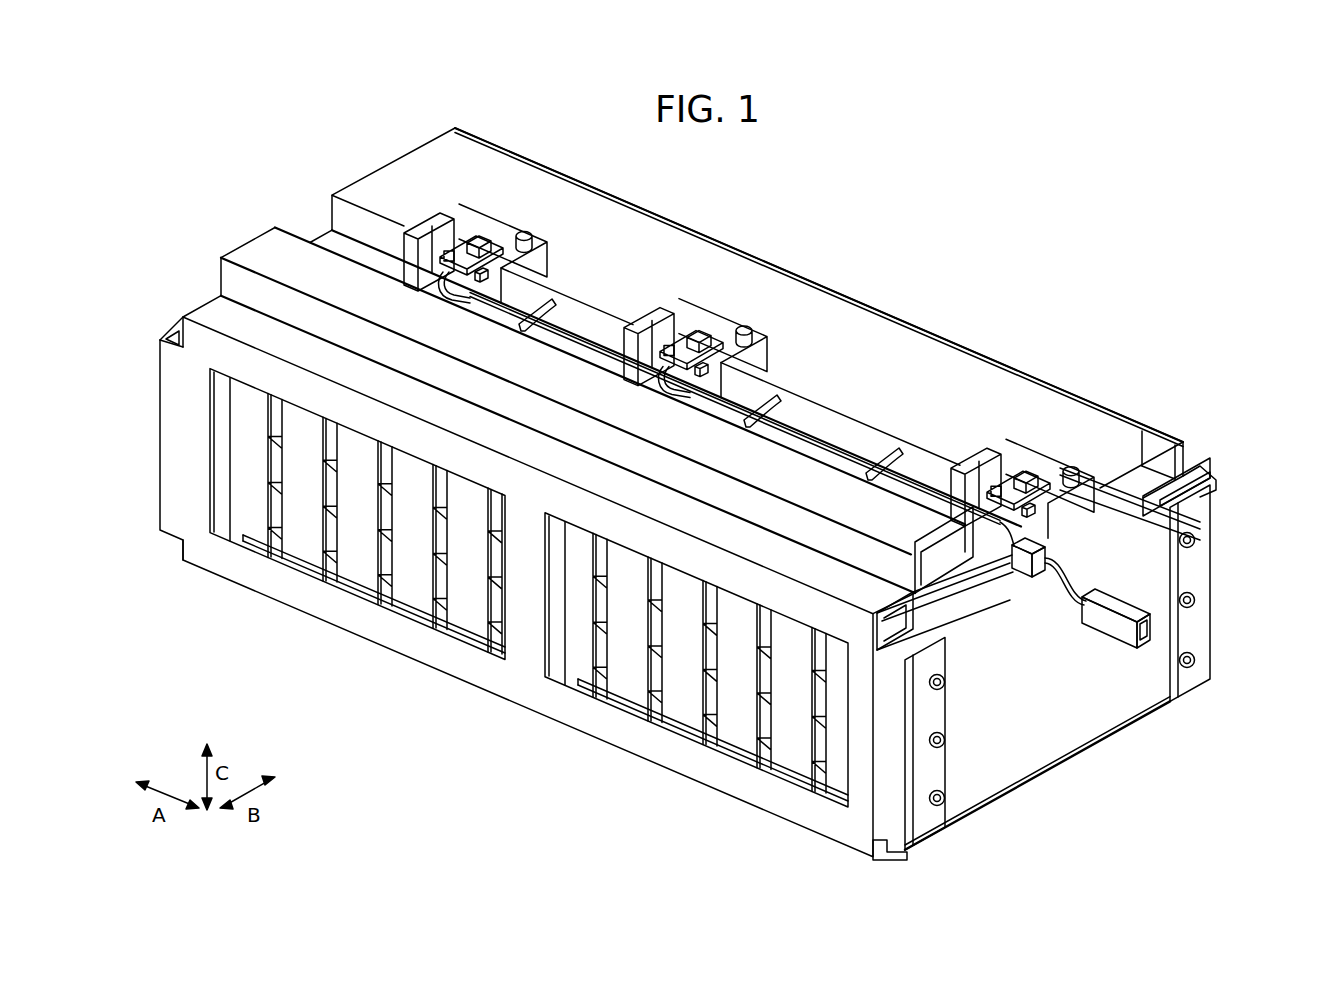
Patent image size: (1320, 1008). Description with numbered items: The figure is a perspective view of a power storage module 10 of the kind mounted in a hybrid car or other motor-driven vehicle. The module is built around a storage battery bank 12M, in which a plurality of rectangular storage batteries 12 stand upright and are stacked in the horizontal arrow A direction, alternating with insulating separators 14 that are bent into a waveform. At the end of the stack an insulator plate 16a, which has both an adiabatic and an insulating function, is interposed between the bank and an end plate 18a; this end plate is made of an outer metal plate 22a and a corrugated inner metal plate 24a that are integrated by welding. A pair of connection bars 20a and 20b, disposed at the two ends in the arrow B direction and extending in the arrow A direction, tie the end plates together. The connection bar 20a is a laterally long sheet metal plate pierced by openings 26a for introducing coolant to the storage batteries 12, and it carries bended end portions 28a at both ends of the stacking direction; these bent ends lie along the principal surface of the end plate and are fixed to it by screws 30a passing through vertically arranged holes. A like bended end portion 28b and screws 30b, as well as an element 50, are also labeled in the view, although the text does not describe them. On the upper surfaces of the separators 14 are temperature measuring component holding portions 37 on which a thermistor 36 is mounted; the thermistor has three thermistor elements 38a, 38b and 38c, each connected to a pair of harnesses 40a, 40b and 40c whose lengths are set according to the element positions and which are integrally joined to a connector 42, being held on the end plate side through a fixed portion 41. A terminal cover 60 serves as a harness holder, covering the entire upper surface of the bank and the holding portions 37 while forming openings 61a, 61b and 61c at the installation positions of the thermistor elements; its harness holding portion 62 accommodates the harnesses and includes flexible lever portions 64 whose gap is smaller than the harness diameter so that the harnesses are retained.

The power storage module 10 is at (1087, 264).
The storage battery 12 is at (682, 705).
The storage battery bank 12M is at (547, 634).
The separator 14 is at (385, 517).
The insulator plate 16a is at (1142, 479).
The end plate 18a is at (1202, 431).
The connection bar 20a is at (470, 688).
The connection bar 20b is at (1215, 490).
The outer metal plate 22a is at (1206, 482).
The inner metal plate 24a is at (1172, 478).
The opening 26a is at (222, 520).
The bended end portion 28a is at (570, 575).
The rear end bracket 28b is at (1225, 611).
The screw 30a is at (945, 800).
The bolts 30b is at (1190, 667).
The thermistor 36 is at (586, 302).
The temperature measuring component holding portion 37 is at (428, 224).
The thermistor element 38a is at (458, 268).
The thermistor element 38b is at (679, 362).
The thermistor element 38c is at (1004, 502).
The harness 40a is at (491, 322).
The harness 40b is at (763, 433).
The harness 40c is at (1062, 600).
The fixed portion 41 is at (1022, 578).
The connector 42 is at (1116, 625).
The electrode terminal 50 is at (480, 241).
The terminal cover 60 is at (737, 333).
The opening 61a is at (518, 228).
The opening 61b is at (737, 322).
The opening 61c is at (1064, 462).
The harness holding portion 62 is at (832, 440).
The flexible lever portion 64 is at (546, 314).